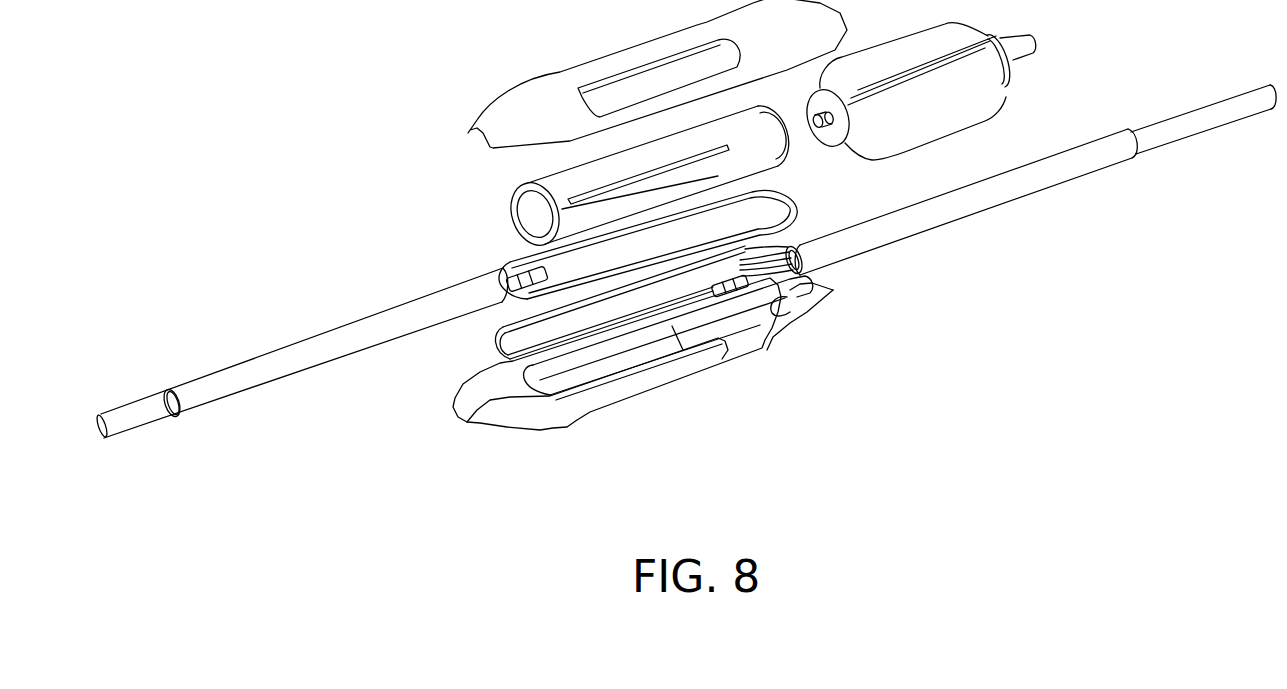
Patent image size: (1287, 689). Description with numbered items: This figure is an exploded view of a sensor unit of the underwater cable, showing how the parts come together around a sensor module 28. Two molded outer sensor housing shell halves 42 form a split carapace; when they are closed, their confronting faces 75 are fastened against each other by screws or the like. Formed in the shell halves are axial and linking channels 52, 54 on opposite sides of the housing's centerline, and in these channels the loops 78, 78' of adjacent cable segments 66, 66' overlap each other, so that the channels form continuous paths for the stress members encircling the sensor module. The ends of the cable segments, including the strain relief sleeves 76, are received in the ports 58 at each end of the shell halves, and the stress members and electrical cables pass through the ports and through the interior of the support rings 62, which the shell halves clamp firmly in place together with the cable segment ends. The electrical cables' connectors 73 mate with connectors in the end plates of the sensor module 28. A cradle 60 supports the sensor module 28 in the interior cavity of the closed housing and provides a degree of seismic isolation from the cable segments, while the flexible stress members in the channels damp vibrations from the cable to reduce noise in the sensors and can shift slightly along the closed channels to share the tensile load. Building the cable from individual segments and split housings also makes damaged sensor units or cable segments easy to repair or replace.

The sensor module 28 is at (997, 80).
The molded outer sensor housing shell half 42 is at (508, 105).
The axial channel 52 is at (766, 322).
The linking channel 54 is at (793, 306).
The port 58 is at (818, 288).
The cradle 60 is at (598, 172).
The support ring 62 is at (515, 202).
The cable segment 66 is at (1203, 132).
The cable segment 66' is at (301, 353).
The electrical cable connector 73 is at (537, 272).
The confronting face 75 is at (604, 130).
The strain relief sleeve 76 is at (970, 207).
The loop 78 is at (590, 309).
The loop 78' is at (666, 240).